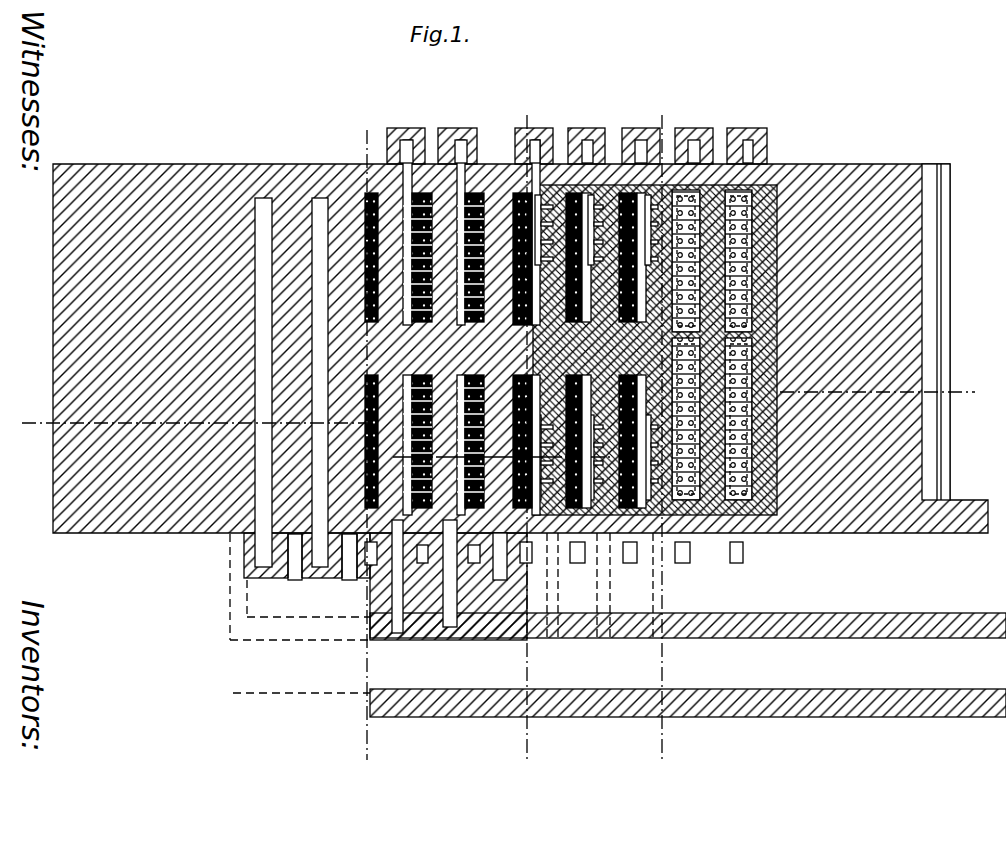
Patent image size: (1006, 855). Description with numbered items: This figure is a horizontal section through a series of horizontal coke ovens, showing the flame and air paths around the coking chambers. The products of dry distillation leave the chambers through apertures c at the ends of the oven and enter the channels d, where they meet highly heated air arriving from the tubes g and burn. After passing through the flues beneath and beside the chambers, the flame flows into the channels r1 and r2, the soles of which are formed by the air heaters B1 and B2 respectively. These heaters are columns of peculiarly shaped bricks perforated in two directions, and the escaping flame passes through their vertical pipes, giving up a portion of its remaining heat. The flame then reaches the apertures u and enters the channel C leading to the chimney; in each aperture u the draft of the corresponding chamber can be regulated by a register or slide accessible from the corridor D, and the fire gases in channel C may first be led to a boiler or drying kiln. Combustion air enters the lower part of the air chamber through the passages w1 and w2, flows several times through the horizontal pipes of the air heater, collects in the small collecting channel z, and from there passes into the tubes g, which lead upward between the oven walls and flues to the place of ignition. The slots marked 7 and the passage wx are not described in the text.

The air heater B1 is at (410, 244).
The air heater B2 is at (425, 470).
The tubes g is at (579, 441).
The small collecting channel z is at (633, 441).
The channel r1 is at (712, 264).
The channel r2 is at (712, 419).
The passages w1 is at (660, 150).
The upper right slot wx is at (748, 150).
The passages w2 is at (400, 630).
The apertures u is at (392, 505).
The apertures c is at (802, 588).
The channels d is at (852, 660).
The vertical slots 7 is at (320, 482).
The channel C is at (186, 425).
The corridor D is at (888, 392).